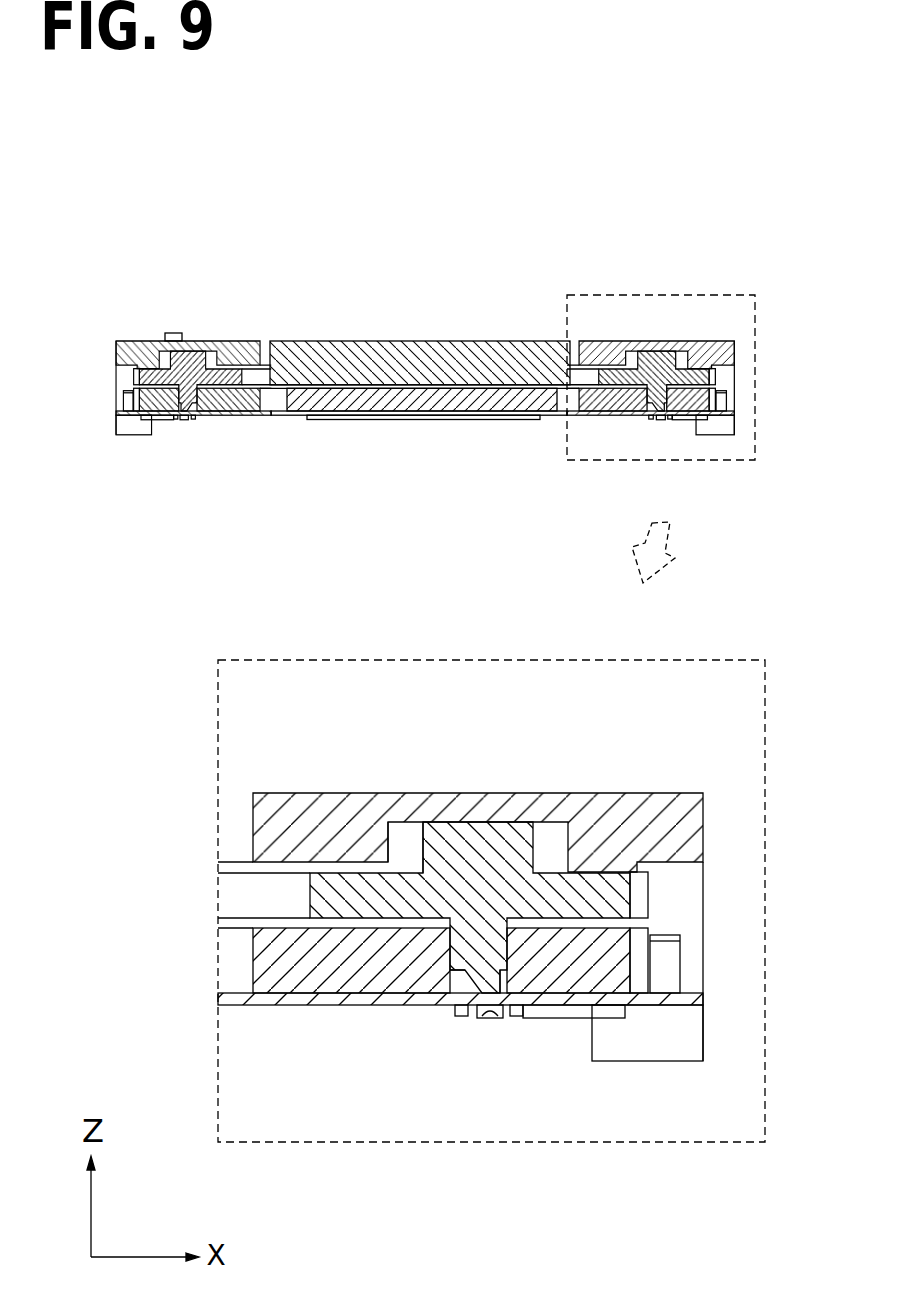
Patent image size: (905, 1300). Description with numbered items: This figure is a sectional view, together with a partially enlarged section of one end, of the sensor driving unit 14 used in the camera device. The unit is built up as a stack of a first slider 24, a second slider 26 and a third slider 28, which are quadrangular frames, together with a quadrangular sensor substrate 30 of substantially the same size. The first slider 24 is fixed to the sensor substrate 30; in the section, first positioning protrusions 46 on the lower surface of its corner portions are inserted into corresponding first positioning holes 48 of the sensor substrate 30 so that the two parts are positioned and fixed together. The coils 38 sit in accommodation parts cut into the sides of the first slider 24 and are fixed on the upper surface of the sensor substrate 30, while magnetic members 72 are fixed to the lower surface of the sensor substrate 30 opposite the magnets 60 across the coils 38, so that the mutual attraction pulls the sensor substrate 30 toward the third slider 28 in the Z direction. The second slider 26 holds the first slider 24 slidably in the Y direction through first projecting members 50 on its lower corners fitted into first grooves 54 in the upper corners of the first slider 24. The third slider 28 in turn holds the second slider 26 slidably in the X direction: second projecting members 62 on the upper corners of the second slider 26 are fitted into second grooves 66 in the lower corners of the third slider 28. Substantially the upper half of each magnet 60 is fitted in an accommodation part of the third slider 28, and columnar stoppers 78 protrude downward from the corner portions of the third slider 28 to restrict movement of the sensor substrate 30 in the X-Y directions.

The sensor driving unit 14 is at (560, 236).
The first slider 24 is at (641, 961).
The second slider 26 is at (658, 895).
The third slider 28 is at (712, 823).
The sensor substrate 30 is at (272, 424).
The coil 38 is at (380, 414).
The first positioning protrusion 46 is at (482, 1019).
The first positioning hole 48 is at (497, 1016).
The first projecting member 50 is at (460, 977).
The first groove 54 is at (500, 950).
The magnet 60 is at (347, 341).
The second projecting member 62 is at (500, 830).
The second groove 66 is at (392, 830).
The magnetic member 72 is at (462, 419).
The stopper 78 is at (617, 1049).